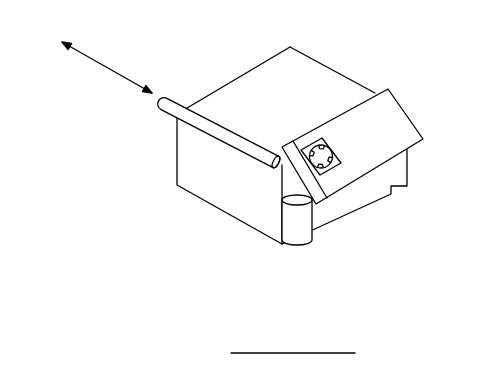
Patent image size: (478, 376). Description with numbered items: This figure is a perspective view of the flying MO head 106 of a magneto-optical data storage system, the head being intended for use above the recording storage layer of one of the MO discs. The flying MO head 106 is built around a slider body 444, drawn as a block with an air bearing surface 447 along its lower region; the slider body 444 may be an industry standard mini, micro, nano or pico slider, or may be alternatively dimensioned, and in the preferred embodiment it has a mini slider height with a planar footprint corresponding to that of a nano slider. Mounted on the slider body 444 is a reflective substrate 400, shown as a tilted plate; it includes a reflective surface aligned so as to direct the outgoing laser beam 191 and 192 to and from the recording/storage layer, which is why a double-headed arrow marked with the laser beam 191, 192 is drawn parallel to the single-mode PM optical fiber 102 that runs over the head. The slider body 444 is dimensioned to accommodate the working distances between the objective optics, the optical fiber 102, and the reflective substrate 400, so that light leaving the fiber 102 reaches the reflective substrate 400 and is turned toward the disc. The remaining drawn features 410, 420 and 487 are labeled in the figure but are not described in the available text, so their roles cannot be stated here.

The single-mode PM optical fiber 102 is at (221, 25).
The flying MO head 106 is at (304, 115).
The outgoing laser beam 191 is at (111, 90).
The outgoing laser beam 192 is at (107, 67).
The reflective substrate 400 is at (400, 98).
The cross-shaped opening 410 is at (333, 150).
The front edge post 420 is at (282, 190).
The slider body 444 is at (277, 146).
The air bearing surface 447 is at (381, 196).
The cylindrical post 487 is at (326, 224).